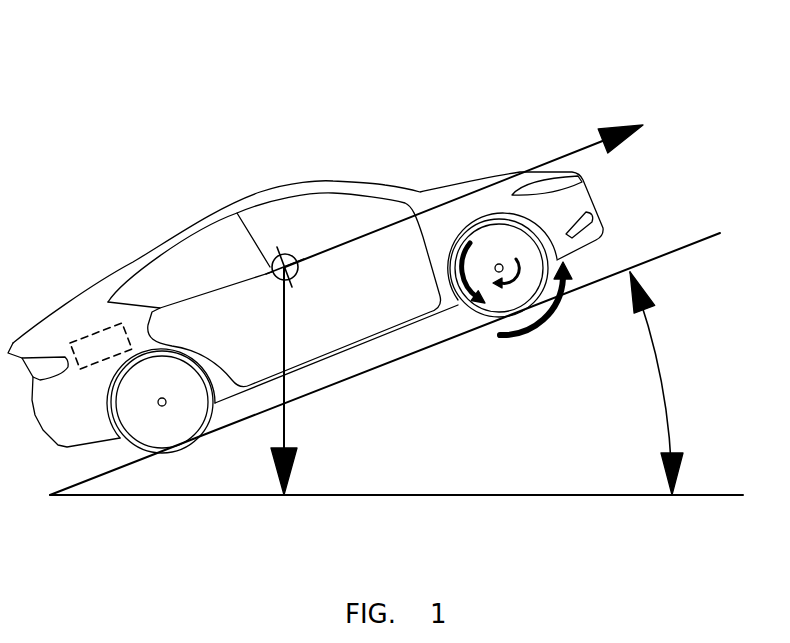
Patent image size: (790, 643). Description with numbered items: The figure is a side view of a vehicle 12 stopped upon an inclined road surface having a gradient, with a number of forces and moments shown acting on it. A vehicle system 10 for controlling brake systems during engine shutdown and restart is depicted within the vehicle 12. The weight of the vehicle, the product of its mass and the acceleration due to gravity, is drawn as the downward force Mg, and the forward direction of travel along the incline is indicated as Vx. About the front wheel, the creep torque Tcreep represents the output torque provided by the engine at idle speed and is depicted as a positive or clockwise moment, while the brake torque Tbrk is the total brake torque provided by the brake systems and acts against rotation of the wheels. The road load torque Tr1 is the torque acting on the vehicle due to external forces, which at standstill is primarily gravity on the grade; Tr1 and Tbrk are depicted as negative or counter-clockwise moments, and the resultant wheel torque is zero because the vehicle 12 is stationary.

The vehicle system 10 is at (88, 333).
The vehicle 12 is at (198, 86).
The gravitational force Mg is at (293, 381).
The longitudinal velocity direction Vx is at (479, 190).
The creep torque Tcreep is at (496, 272).
The brake torque Tbrk is at (503, 284).
The road load torque Tr1 is at (529, 309).